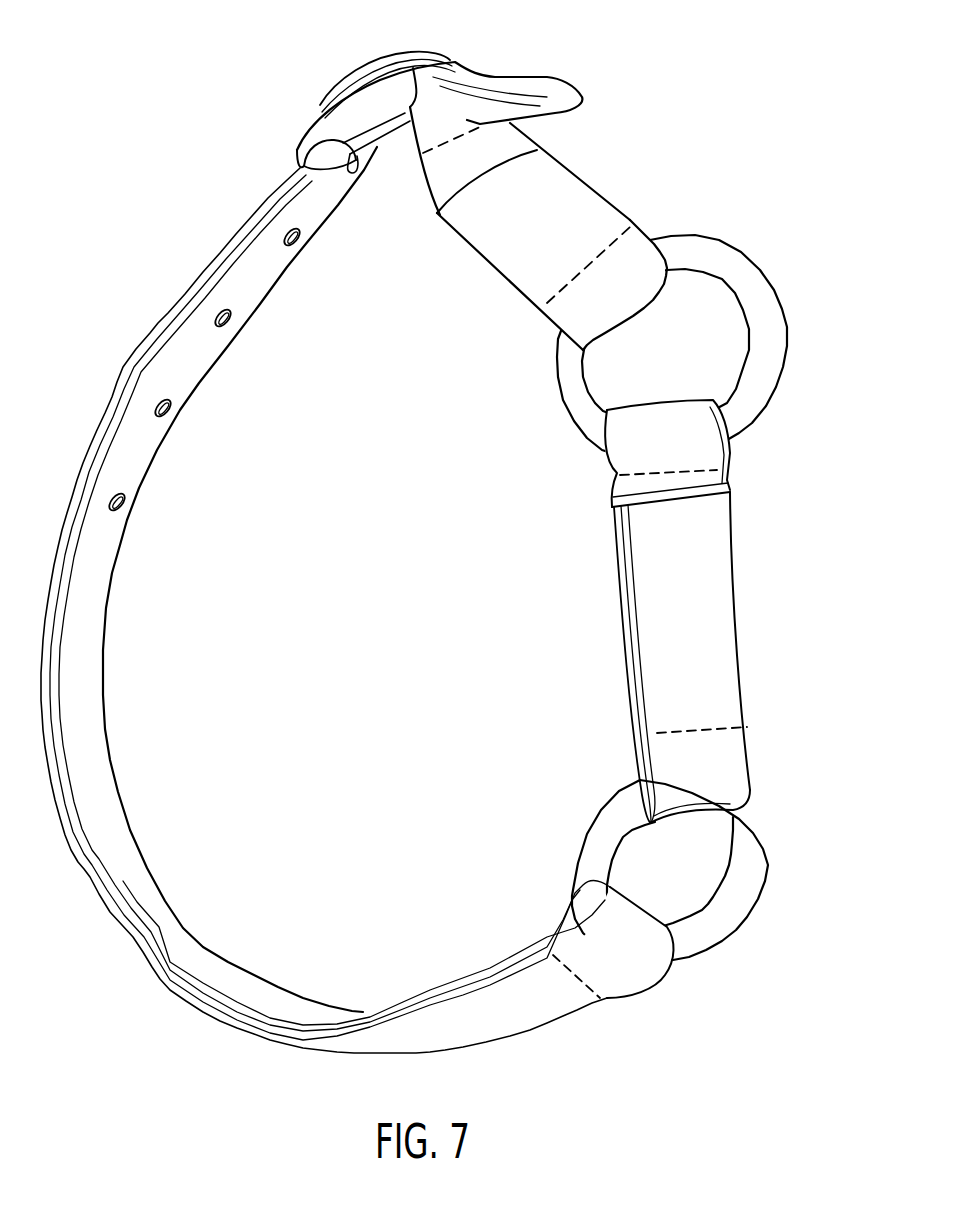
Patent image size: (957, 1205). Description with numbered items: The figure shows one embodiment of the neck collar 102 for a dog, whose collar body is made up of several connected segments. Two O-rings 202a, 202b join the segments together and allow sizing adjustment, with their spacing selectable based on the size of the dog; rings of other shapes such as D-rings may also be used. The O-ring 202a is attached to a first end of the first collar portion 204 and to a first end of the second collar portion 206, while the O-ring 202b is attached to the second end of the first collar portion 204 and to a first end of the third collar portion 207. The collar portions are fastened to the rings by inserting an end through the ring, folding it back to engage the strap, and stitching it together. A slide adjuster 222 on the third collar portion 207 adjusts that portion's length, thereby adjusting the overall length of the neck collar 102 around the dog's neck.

The neck collar 102 is at (449, 545).
The slide adjuster 222 is at (304, 122).
The third collar portion 207 is at (520, 297).
The O-ring 202a is at (745, 248).
The O-ring 202b is at (755, 880).
The first collar portion 204 is at (630, 625).
The second collar portion 206 is at (95, 670).